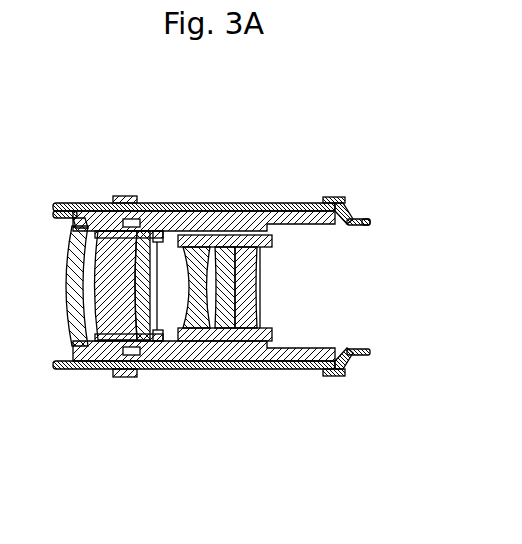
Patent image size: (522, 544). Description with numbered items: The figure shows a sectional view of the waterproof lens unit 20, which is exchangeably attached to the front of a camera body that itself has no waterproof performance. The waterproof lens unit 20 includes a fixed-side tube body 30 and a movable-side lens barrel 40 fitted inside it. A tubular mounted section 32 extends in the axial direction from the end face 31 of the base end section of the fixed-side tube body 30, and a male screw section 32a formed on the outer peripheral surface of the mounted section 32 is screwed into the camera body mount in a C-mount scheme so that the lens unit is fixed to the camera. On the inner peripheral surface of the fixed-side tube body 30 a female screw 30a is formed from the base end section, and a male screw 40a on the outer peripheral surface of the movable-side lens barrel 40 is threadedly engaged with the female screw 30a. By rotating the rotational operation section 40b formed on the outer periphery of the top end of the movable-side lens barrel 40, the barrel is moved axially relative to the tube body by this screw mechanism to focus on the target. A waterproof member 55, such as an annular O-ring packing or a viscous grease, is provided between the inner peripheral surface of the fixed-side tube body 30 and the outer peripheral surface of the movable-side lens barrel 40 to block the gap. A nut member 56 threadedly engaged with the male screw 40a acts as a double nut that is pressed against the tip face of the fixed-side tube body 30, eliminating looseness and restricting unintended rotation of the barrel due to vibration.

The waterproof lens unit 20 is at (296, 153).
The fixed-side tube body 30 is at (190, 203).
The female screw 30a is at (318, 349).
The end face 31 is at (345, 197).
The mounted section 32 is at (366, 226).
The male screw section 32a is at (364, 218).
The movable-side lens barrel 40 is at (304, 225).
The male screw 40a is at (214, 371).
The rotational operation section 40b is at (105, 206).
The waterproof member 55 is at (238, 235).
The nut member 56 is at (127, 196).